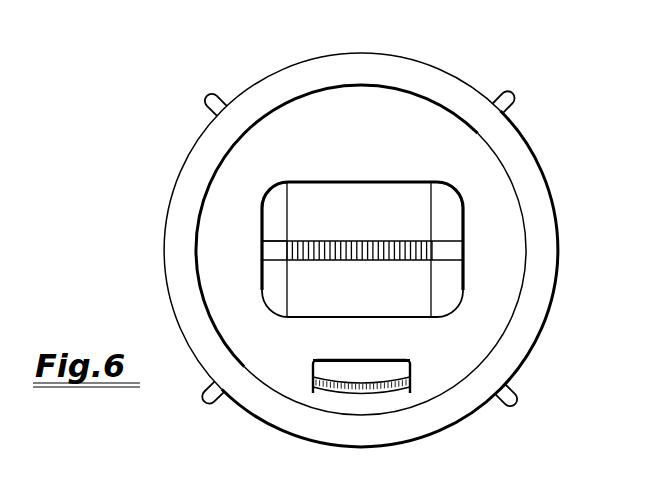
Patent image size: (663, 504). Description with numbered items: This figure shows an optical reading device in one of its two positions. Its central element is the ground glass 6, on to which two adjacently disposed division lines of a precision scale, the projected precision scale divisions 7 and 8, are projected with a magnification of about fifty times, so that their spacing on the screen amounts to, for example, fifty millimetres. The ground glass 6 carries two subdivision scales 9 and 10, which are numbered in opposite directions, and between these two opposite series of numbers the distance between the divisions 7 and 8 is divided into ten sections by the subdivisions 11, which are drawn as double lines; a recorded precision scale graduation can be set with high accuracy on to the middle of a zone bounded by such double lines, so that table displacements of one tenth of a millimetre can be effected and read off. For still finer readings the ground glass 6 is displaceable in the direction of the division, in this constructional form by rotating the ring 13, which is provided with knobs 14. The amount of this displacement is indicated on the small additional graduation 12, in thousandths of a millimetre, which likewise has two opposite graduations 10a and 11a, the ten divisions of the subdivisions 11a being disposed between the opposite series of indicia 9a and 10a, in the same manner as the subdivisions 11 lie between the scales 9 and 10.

The ground glass 6 is at (287, 232).
The projected precision scale division 7 is at (432, 204).
The projected precision scale division 8 is at (289, 210).
The subdivision scale 9 is at (437, 233).
The subdivision scale 10 is at (440, 268).
The subdivisions 11 is at (445, 253).
The additional graduation 12 is at (343, 398).
The ring 13 is at (427, 86).
The knobs 14 is at (515, 99).
The series of numbers 9a is at (410, 362).
The opposite graduation 10a is at (407, 393).
The subdivisions 11a is at (313, 378).